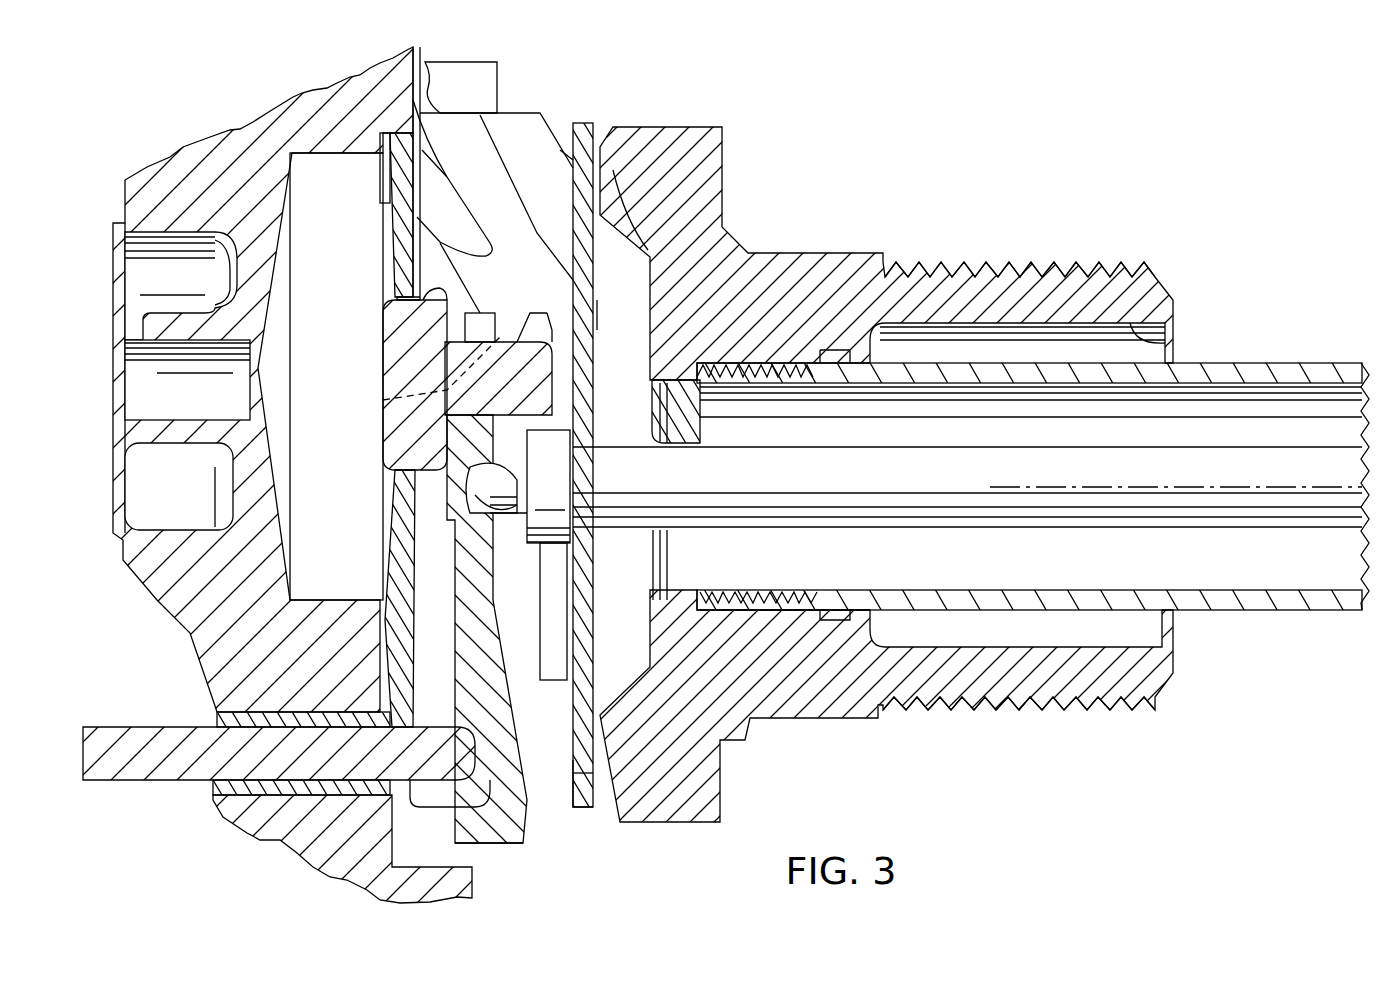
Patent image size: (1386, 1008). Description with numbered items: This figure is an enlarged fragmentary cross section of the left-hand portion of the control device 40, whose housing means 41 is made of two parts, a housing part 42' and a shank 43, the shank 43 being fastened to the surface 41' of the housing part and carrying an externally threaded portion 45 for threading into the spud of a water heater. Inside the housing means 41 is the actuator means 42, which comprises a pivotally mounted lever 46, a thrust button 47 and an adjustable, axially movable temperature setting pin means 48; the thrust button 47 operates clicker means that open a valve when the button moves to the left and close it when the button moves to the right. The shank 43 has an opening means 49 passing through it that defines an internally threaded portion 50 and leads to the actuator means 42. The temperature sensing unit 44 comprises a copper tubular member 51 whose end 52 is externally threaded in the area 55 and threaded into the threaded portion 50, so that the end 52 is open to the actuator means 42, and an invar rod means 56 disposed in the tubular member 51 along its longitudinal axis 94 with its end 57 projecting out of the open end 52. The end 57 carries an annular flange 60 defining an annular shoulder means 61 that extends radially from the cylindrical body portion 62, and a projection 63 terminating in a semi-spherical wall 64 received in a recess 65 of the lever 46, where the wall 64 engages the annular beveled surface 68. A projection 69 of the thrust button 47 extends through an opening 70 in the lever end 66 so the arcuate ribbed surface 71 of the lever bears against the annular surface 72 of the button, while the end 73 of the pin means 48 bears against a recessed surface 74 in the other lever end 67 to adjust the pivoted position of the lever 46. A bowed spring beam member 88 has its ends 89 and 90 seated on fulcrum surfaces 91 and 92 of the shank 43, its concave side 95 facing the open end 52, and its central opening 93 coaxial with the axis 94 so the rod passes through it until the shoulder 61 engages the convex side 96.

The control device 40 is at (867, 137).
The housing means 41 is at (292, 469).
The surface of housing part 41' is at (483, 87).
The actuator means 42 is at (336, 376).
The housing part 42' is at (187, 304).
The shank 43 is at (835, 267).
The temperature sensing unit 44 is at (1113, 225).
The externally threaded portion 45 is at (1010, 260).
The lever 46 is at (413, 647).
The thrust button 47 is at (407, 343).
The pin means 48 is at (127, 727).
The opening means 49 is at (1167, 337).
The internally threaded portion 50 is at (775, 590).
The tubular member 51 is at (1293, 363).
The end of tubular member 52 is at (708, 363).
The externally threaded area 55 is at (760, 610).
The rod means 56 is at (1127, 513).
The end of rod means 57 is at (630, 443).
The annular flange 60 is at (547, 530).
The annular shoulder means 61 is at (573, 537).
The cylindrical body portion 62 is at (903, 527).
The projection 63 is at (497, 513).
The semi-spherical wall 64 is at (470, 477).
The recess 65 is at (470, 513).
The end of lever 66 is at (480, 317).
The end of lever 67 is at (487, 830).
The annular beveled surface 68 is at (497, 460).
The projection 69 is at (537, 340).
The opening 70 is at (503, 340).
The arcuate ribbed surface 71 is at (383, 400).
The annular surface 72 is at (452, 323).
The end of temperature adjustment member 73 is at (527, 707).
The recessed surface 74 is at (453, 800).
The spring beam member 88 is at (575, 217).
The end of spring beam member 89 is at (587, 127).
The end of spring beam member 90 is at (580, 803).
The fulcrum surface 91 is at (573, 165).
The fulcrum surface 92 is at (590, 773).
The central opening 93 is at (583, 443).
The longitudinal axis 94 is at (1200, 487).
The concave side 95 is at (597, 313).
The convex side 96 is at (567, 617).